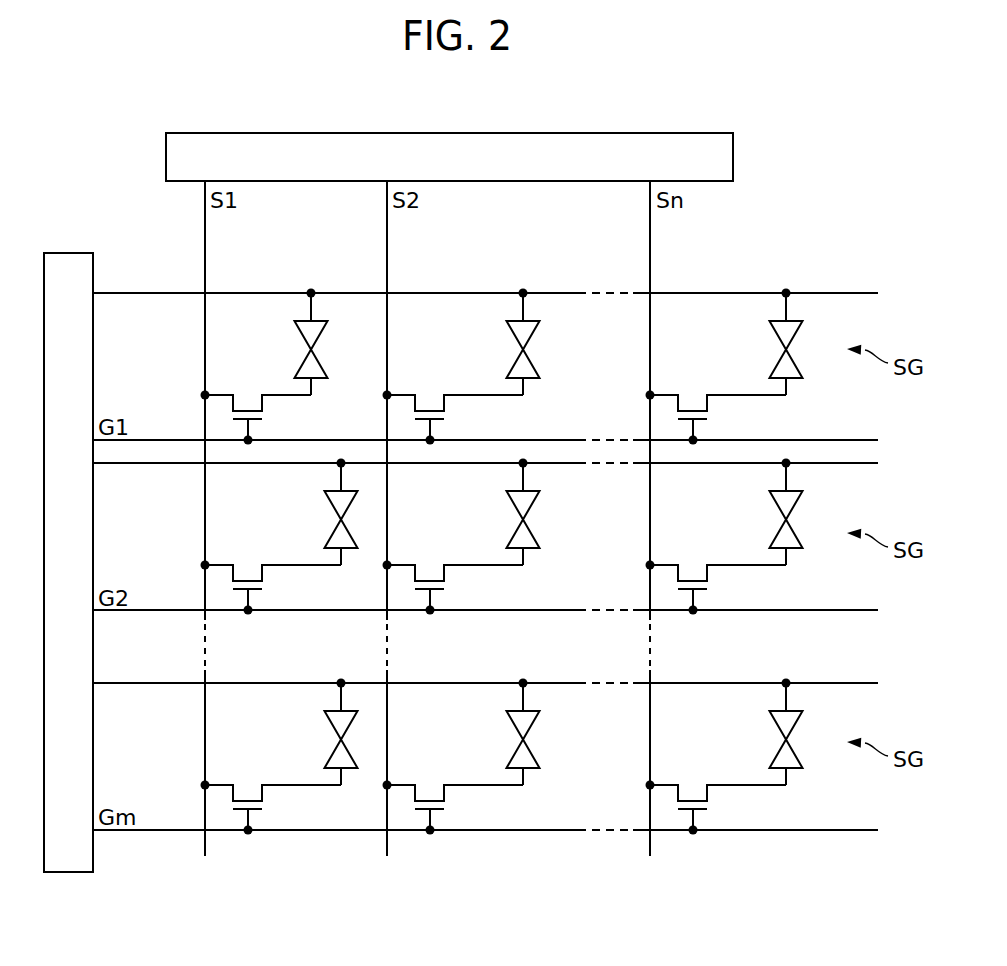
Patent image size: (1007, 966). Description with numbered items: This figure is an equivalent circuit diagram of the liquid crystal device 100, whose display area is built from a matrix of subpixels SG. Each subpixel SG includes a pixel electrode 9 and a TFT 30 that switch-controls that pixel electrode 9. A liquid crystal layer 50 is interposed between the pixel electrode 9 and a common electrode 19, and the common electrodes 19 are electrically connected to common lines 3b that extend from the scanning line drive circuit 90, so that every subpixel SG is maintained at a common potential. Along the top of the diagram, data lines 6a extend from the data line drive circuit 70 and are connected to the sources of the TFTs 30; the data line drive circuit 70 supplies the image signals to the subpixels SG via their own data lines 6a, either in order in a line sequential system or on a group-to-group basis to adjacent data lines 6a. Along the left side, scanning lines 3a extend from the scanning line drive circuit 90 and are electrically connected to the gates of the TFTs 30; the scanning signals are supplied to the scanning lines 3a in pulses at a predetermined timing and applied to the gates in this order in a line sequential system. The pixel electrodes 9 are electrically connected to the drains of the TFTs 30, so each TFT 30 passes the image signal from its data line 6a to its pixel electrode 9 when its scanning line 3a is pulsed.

The data line drive circuit 70 is at (173, 155).
The scanning line drive circuit 90 is at (69, 270).
The liquid crystal device 100 is at (846, 169).
The common line 3b is at (170, 293).
The scanning line 3a is at (168, 440).
The data line 6a is at (205, 273).
The liquid crystal layer 50 is at (518, 534).
The common electrode 19 is at (313, 307).
The pixel electrode 9 is at (313, 386).
The TFT 30 is at (513, 613).